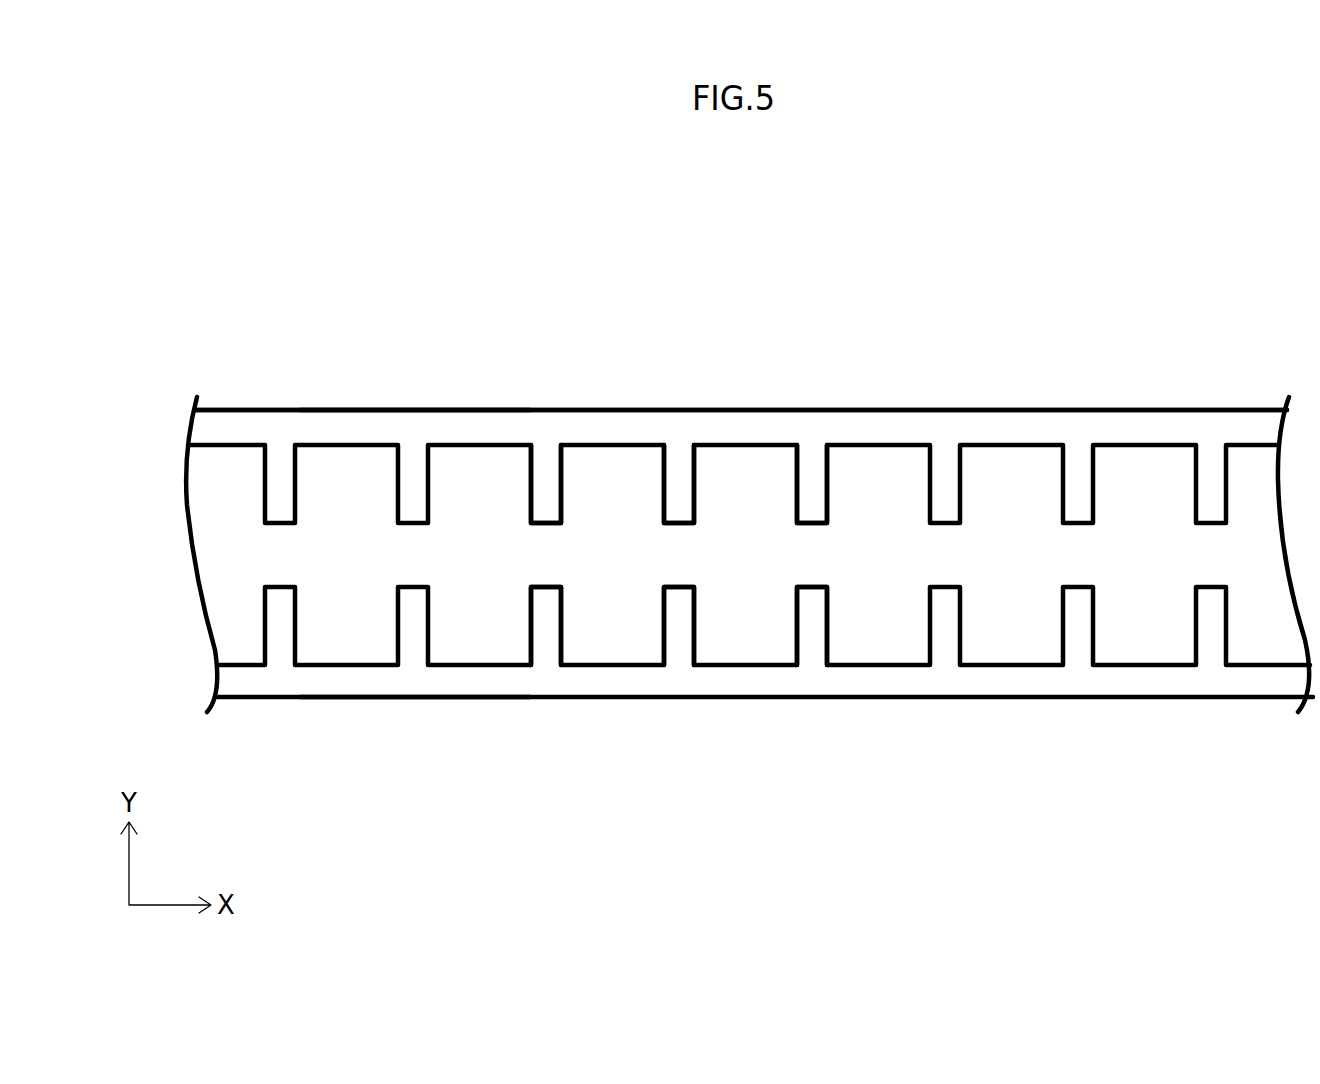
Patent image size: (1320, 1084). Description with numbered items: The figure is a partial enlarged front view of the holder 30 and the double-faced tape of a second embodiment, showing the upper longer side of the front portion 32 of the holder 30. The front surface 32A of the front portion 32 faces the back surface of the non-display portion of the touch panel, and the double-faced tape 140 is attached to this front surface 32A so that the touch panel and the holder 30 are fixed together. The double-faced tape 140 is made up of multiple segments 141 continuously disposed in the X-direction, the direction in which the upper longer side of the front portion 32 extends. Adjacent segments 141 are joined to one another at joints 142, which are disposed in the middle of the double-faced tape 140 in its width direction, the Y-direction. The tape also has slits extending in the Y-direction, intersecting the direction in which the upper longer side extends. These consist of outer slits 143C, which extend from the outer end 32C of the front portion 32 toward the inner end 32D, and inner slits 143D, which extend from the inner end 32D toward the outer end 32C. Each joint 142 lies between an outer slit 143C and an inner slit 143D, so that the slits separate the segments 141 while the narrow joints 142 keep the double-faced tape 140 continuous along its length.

The holder 30 is at (252, 408).
The front portion 32 is at (208, 432).
The front surface 32A is at (329, 430).
The outer end 32C is at (419, 408).
The inner end 32D is at (418, 700).
The double-faced tape 140 is at (230, 612).
The segments 141 is at (613, 542).
The joints 142 is at (545, 555).
The outer slits 143C is at (557, 502).
The inner slits 143D is at (557, 628).